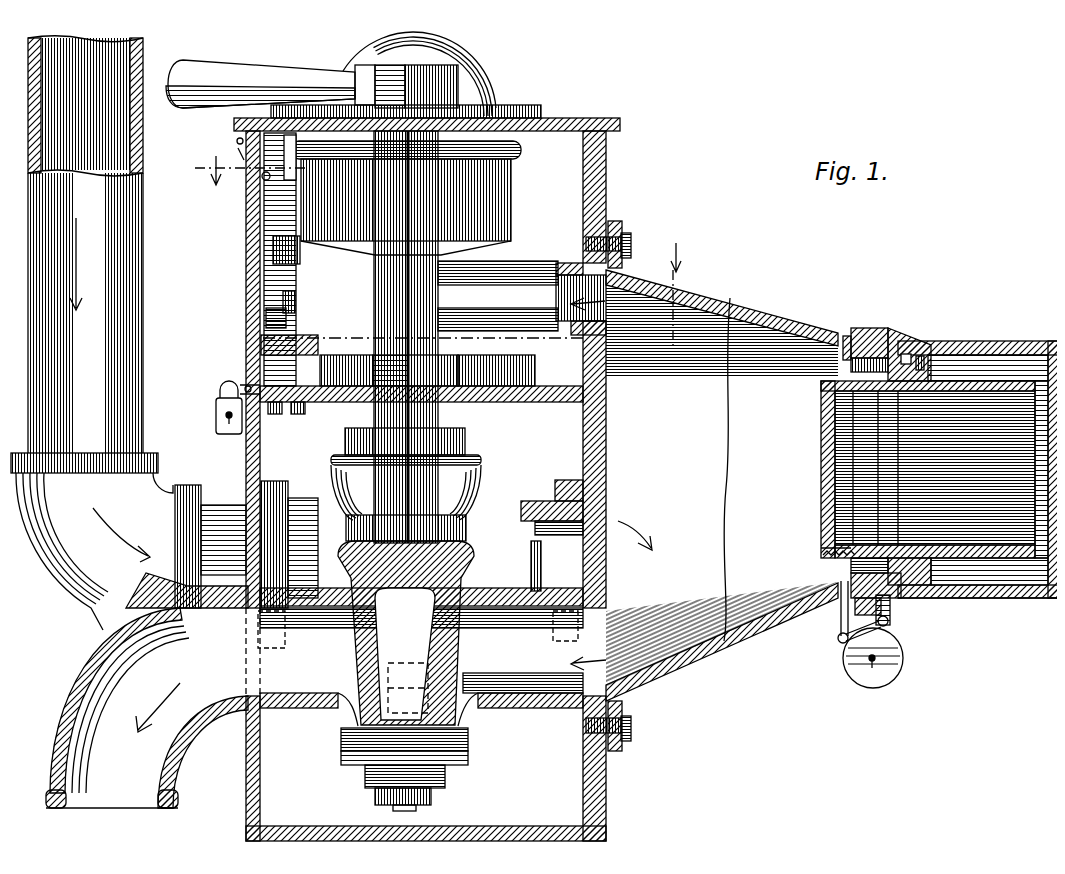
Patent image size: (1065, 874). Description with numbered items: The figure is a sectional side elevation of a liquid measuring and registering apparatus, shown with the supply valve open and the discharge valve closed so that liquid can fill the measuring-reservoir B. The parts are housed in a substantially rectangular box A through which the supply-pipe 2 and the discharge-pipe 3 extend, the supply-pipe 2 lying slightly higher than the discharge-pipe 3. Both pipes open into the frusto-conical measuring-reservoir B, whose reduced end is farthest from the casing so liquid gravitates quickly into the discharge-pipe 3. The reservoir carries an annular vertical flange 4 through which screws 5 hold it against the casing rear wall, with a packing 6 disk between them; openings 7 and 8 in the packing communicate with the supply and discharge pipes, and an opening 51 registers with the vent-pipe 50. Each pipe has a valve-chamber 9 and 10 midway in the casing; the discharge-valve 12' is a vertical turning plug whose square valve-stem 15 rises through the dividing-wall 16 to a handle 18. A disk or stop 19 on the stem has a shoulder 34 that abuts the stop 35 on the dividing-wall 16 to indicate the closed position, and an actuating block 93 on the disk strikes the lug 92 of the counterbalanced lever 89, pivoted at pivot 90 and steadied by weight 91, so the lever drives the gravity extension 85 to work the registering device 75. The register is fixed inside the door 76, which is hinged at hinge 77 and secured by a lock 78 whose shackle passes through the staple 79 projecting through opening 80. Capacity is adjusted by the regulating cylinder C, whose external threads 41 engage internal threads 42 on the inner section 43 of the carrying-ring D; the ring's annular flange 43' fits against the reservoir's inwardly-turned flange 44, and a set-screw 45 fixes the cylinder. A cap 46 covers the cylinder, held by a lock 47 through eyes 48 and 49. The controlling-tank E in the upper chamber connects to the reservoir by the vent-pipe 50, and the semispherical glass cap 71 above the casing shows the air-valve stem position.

The supply-pipe 2 is at (110, 363).
The discharge-pipe 3 is at (500, 713).
The annular vertical flange 4 is at (612, 213).
The screws 5 is at (623, 230).
The packing 6 is at (610, 447).
The opening in packing-disk 7 is at (610, 523).
The opening in packing-disk 8 is at (608, 630).
The valve-chamber 9 is at (473, 494).
The valve-chamber 10 is at (327, 703).
The discharge-valve 12' is at (386, 620).
The valve-stem 15 is at (375, 433).
The dividing-wall 16 is at (488, 395).
The handle 18 is at (255, 72).
The disk or stop 19 is at (517, 360).
The shoulder 34 is at (450, 360).
The stop 35 is at (462, 313).
The external threads 41 is at (823, 547).
The internal threads 42 is at (930, 588).
The inner section of carrying-ring 43 is at (988, 453).
The annular flange 43' is at (898, 336).
The inwardly-turned flange 44 is at (845, 320).
The set-screw 45 is at (914, 348).
The cap 46 is at (1020, 343).
The lock 47 is at (853, 672).
The eye 48 is at (882, 617).
The eye 49 is at (830, 633).
The vent-pipe 50 is at (517, 267).
The opening in packing-disk 51 is at (627, 268).
The semispherical glass cap 71 is at (482, 66).
The registering device 75 is at (240, 236).
The door 76 is at (238, 283).
The hinge 77 is at (233, 147).
The lock 78 is at (208, 410).
The hasp or staple 79 is at (212, 381).
The opening 80 is at (240, 374).
The gravity extension 85 is at (294, 248).
The counterbalanced lever 89 is at (283, 292).
The pivot 90 is at (285, 302).
The weight 91 is at (266, 406).
The lug 92 is at (290, 406).
The actuating block 93 is at (305, 337).
The box A is at (526, 442).
The measuring-reservoir B is at (722, 493).
The regulating cylinder C is at (813, 455).
The carrying-ring D is at (895, 346).
The controlling-tank E is at (480, 203).